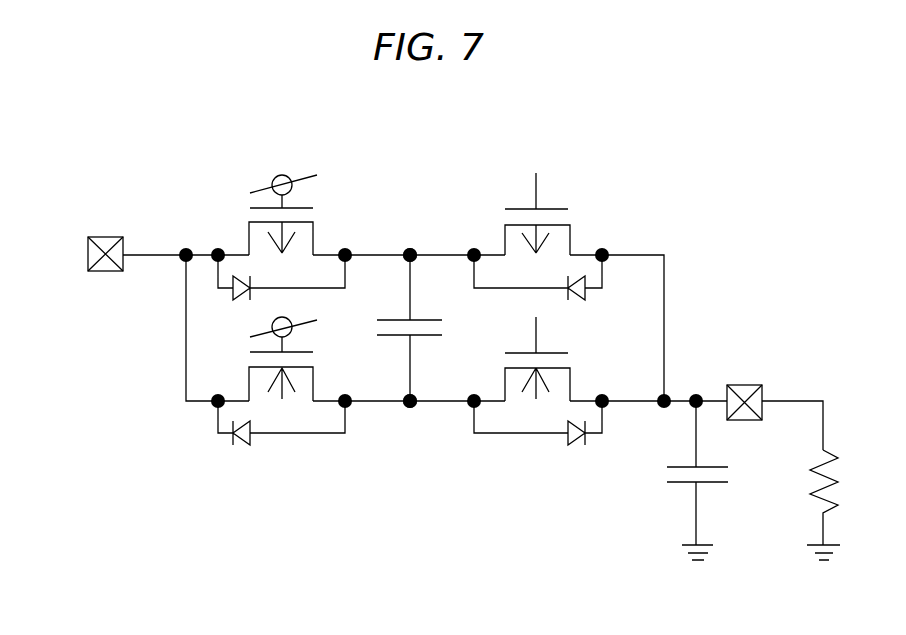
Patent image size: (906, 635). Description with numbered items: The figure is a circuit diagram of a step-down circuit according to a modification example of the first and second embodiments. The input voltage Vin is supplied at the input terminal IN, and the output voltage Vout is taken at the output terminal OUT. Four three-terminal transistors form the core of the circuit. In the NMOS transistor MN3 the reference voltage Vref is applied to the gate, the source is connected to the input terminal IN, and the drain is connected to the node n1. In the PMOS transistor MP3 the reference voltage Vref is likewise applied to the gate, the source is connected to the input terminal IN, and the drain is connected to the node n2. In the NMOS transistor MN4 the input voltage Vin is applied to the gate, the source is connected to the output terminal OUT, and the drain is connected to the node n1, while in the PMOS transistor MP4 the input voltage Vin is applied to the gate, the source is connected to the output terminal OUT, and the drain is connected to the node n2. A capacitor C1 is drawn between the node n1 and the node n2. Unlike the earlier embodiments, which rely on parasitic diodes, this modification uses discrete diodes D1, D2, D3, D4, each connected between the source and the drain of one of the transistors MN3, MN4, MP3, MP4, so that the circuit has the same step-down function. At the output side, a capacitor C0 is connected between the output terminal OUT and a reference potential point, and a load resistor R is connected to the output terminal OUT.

The input terminal IN is at (104, 237).
The output terminal OUT is at (743, 384).
The input voltage Vin is at (289, 262).
The output voltage Vout is at (795, 383).
The reference voltage Vref is at (306, 246).
The PMOS transistor MP3 is at (305, 215).
The PMOS transistor MP4 is at (560, 232).
The NMOS transistor MN3 is at (306, 359).
The NMOS transistor MN4 is at (561, 377).
The diode D1 is at (276, 435).
The diode D2 is at (276, 290).
The diode D3 is at (544, 435).
The diode D4 is at (544, 287).
The capacitor C1 is at (411, 328).
The capacitor C0 is at (698, 480).
The load resistor R is at (813, 505).
The node n1 is at (428, 393).
The node n2 is at (428, 247).